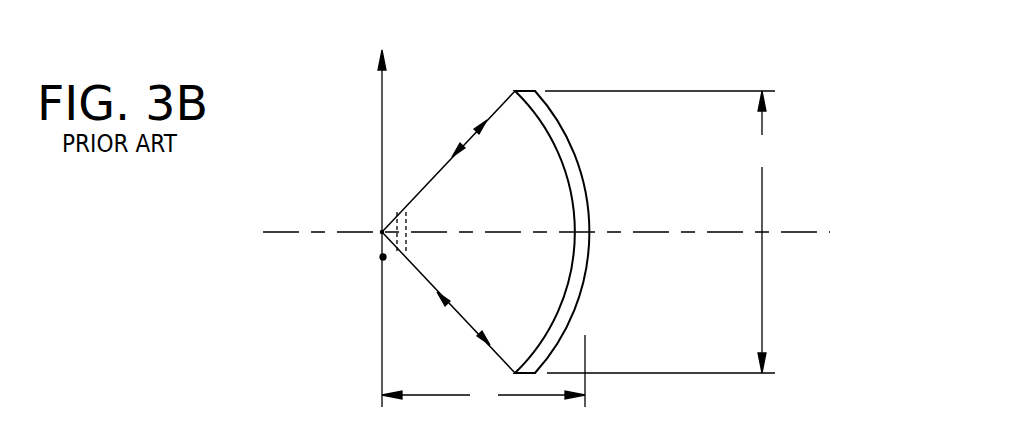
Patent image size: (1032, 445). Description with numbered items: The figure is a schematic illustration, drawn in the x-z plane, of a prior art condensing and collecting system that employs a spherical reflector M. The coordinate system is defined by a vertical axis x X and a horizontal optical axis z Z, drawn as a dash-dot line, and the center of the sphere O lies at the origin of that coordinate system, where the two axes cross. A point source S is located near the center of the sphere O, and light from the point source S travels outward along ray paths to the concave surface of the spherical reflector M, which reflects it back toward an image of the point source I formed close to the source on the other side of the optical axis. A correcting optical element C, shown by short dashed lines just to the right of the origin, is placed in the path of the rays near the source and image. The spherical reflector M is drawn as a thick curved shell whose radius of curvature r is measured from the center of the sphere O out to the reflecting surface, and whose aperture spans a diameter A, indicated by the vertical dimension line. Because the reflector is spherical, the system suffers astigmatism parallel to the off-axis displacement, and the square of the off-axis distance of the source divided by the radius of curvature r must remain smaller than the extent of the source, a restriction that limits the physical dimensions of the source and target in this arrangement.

The x axis X is at (373, 213).
The z axis Z is at (557, 233).
The center of the sphere O is at (371, 245).
The point source S is at (382, 232).
The image of the point source I is at (383, 257).
The correcting optical element C is at (402, 248).
The spherical reflector M is at (552, 214).
The diameter of the aperture of the spherical surface A is at (660, 232).
The radius of curvature of the spherical surface r is at (483, 371).